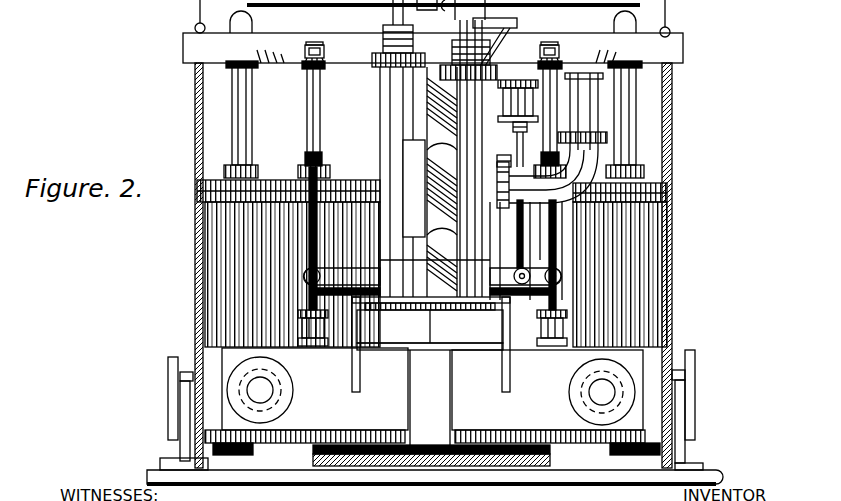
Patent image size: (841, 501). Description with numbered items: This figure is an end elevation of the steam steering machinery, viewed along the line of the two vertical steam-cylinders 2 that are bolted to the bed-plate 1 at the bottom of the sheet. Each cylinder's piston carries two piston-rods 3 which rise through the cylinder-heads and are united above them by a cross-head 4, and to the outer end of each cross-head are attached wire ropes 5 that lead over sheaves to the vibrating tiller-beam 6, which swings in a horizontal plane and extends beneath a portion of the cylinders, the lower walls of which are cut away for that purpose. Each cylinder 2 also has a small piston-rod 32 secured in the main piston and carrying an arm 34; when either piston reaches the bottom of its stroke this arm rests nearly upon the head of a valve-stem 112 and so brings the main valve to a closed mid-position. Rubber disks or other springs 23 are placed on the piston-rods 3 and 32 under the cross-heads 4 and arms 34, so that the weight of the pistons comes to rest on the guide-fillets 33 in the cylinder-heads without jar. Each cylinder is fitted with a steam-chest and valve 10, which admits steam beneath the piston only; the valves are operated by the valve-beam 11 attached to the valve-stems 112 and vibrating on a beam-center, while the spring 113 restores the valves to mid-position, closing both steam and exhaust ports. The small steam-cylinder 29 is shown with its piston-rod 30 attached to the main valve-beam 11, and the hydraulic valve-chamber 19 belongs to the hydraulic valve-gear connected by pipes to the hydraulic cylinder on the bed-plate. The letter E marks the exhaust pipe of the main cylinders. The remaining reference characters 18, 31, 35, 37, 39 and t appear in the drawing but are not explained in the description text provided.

The bed-plate 1 is at (708, 477).
The vertical steam-cylinder 2 is at (432, 263).
The piston-rod 3 is at (437, 88).
The cross-head 4 is at (425, 53).
The wire rope 5 is at (435, 265).
The tiller-beam 6 is at (436, 454).
The steam-chest and valve 10 is at (432, 389).
The valve-beam 11 is at (433, 277).
The screw shaft column 18 is at (398, 161).
The hydraulic valve-chamber 19 is at (468, 158).
The rubber disk spring 23 is at (232, 70).
The small steam-cylinder 29 is at (518, 98).
The piston-rod of small steam-cylinder 30 is at (505, 155).
The strut arm 31 is at (495, 38).
The small piston-rod 32 is at (432, 113).
The guide-fillet 33 is at (414, 165).
The arm 34 is at (315, 43).
The rod 35 is at (522, 231).
The valve stem 37 is at (531, 149).
The pipe 39 is at (578, 140).
The valve-stem 112 is at (309, 246).
The spring 113 is at (432, 319).
The wire t is at (437, 18).
The exhaust pipe E is at (695, 400).